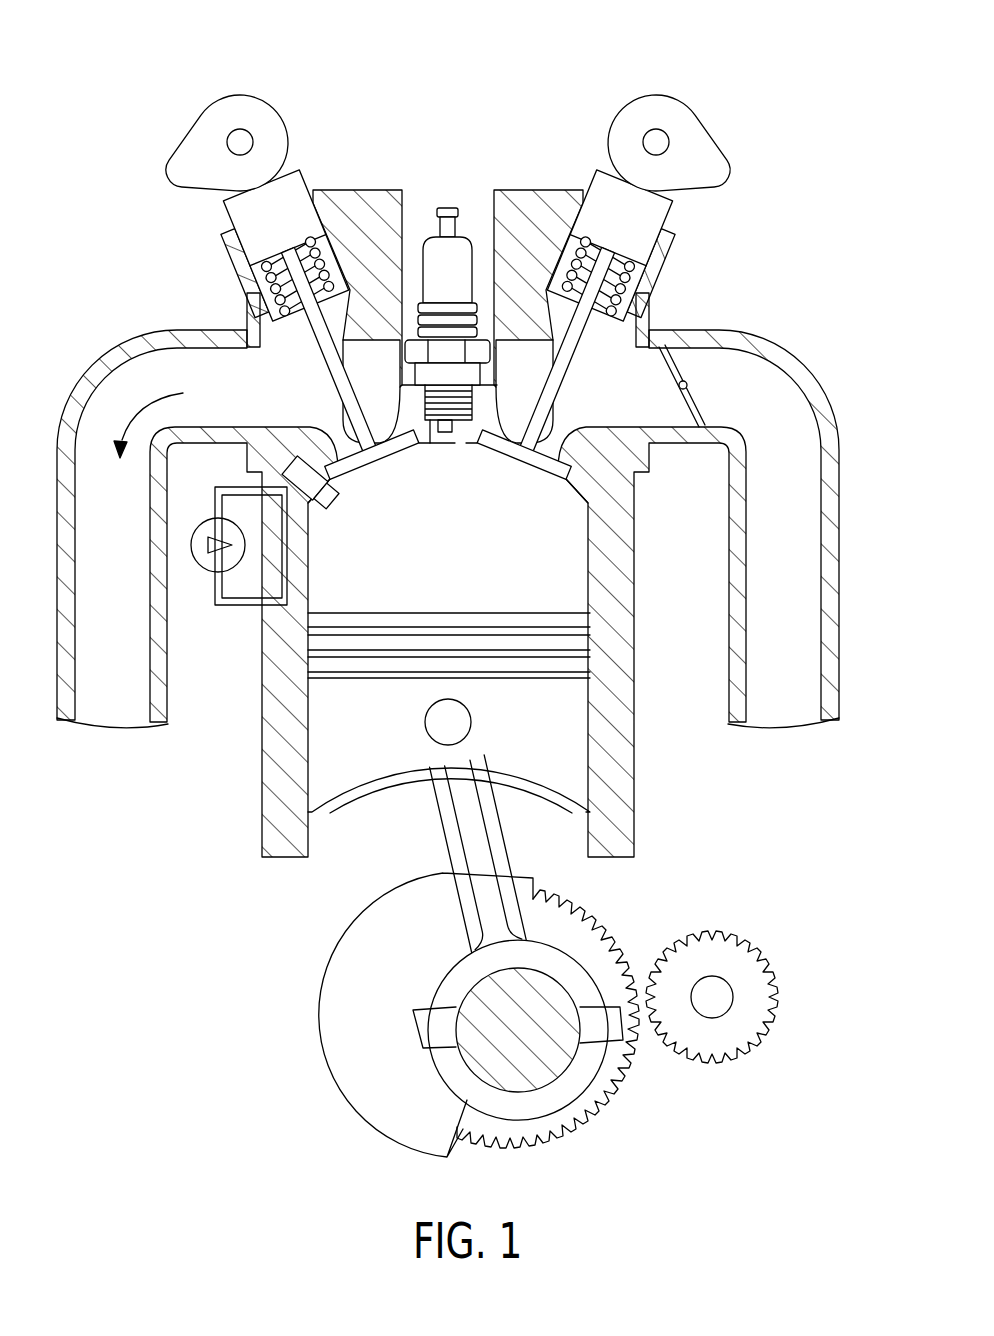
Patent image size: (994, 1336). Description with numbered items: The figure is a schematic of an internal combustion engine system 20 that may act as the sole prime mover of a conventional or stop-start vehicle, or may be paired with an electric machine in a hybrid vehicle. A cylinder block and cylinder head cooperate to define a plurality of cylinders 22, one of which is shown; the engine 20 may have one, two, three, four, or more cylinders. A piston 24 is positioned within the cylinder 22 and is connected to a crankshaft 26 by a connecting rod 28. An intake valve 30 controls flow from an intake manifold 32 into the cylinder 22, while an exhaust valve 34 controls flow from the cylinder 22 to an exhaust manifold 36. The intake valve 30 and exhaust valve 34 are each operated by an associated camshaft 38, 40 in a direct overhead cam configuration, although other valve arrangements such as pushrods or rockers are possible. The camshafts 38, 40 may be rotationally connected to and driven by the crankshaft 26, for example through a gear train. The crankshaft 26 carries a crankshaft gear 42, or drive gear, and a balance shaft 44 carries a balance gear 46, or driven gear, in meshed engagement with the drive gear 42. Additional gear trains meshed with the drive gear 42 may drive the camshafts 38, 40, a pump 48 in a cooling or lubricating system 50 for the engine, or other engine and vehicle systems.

The internal combustion engine system 20 is at (808, 86).
The cylinder 22 is at (556, 572).
The piston 24 is at (512, 733).
The crankshaft 26 is at (460, 1007).
The connecting rod 28 is at (453, 825).
The intake valve 30 is at (700, 260).
The intake manifold 32 is at (838, 332).
The exhaust valve 34 is at (205, 257).
The exhaust manifold 36 is at (115, 335).
The camshaft 38 is at (662, 138).
The camshaft 40 is at (250, 138).
The crankshaft gear 42 is at (602, 922).
The balance shaft 44 is at (718, 997).
The balance gear 46 is at (757, 1022).
The pump 48 is at (215, 573).
The cooling or lubricating system 50 is at (248, 606).